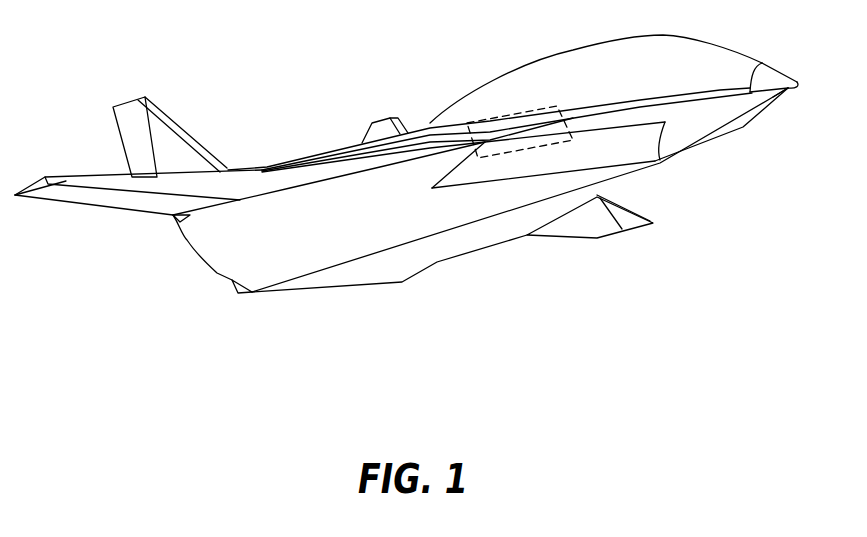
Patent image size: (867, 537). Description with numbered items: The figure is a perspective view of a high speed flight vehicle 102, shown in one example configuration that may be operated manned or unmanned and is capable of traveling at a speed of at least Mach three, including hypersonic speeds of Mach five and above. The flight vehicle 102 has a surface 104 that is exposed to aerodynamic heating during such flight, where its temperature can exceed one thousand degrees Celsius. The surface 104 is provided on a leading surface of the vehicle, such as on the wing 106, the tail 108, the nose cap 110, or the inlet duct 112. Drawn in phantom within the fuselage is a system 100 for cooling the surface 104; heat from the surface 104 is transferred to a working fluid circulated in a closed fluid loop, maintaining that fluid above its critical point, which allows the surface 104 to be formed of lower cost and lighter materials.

The system 100 is at (562, 104).
The high speed flight vehicle 102 is at (503, 68).
The surface 104 is at (736, 58).
The wing 106 is at (595, 218).
The tail 108 is at (147, 123).
The nose cap 110 is at (792, 86).
The inlet duct 112 is at (643, 145).